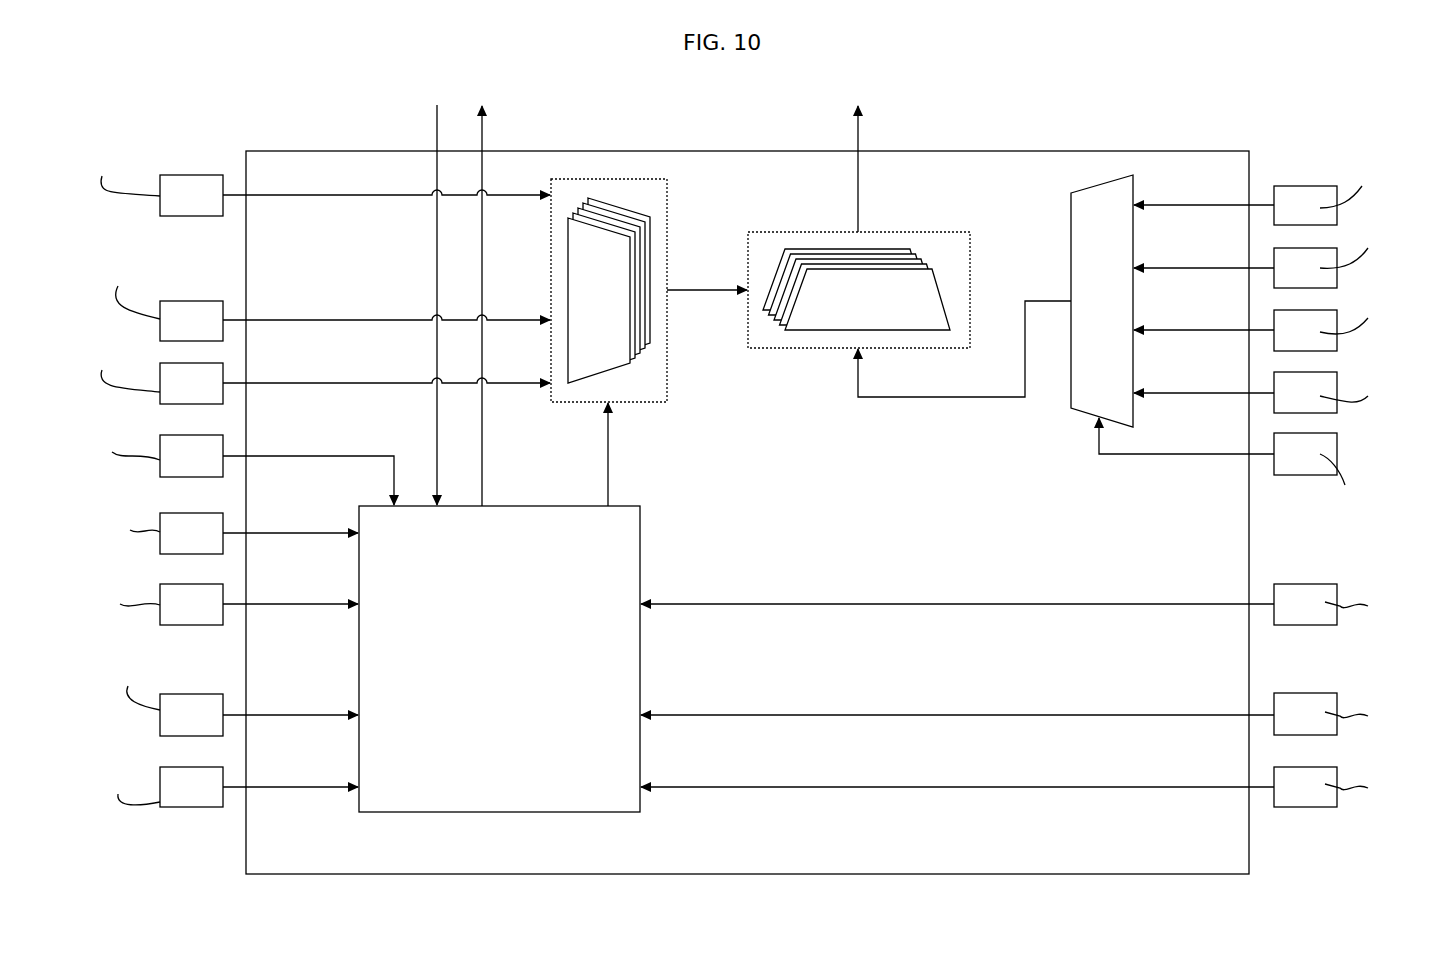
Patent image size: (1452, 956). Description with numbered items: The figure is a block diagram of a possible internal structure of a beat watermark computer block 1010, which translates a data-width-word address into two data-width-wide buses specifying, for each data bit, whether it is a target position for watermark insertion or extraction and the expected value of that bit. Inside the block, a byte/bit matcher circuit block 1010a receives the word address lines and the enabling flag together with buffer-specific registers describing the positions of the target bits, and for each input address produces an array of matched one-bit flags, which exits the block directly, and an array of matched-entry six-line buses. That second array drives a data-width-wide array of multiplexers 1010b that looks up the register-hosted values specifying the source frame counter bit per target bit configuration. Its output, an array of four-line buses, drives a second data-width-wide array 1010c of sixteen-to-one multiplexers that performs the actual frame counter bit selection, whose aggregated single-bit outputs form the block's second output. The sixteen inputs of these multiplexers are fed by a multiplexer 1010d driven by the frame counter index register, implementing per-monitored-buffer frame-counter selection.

The beat watermark computer block 1010 is at (999, 133).
The byte/bit matcher circuit block 1010a is at (619, 557).
The array of 64×4-to-1×4 multiplexers 1010b is at (610, 241).
The array of 16-to-1 multiplexers 1010c is at (812, 318).
The 4×16-to-1×16 multiplexer 1010d is at (1085, 395).